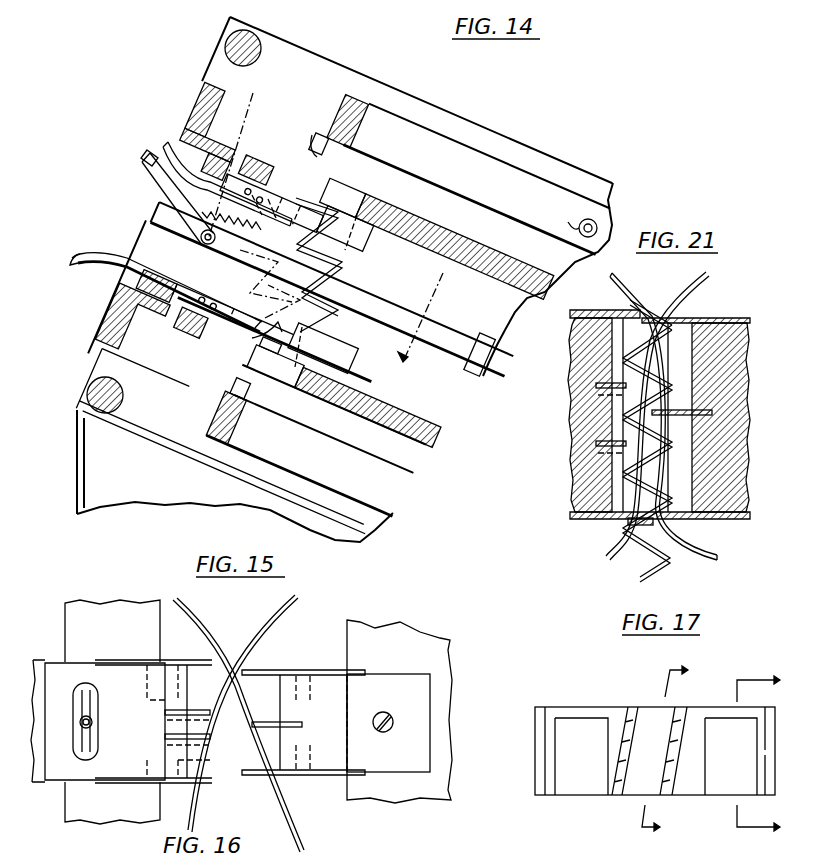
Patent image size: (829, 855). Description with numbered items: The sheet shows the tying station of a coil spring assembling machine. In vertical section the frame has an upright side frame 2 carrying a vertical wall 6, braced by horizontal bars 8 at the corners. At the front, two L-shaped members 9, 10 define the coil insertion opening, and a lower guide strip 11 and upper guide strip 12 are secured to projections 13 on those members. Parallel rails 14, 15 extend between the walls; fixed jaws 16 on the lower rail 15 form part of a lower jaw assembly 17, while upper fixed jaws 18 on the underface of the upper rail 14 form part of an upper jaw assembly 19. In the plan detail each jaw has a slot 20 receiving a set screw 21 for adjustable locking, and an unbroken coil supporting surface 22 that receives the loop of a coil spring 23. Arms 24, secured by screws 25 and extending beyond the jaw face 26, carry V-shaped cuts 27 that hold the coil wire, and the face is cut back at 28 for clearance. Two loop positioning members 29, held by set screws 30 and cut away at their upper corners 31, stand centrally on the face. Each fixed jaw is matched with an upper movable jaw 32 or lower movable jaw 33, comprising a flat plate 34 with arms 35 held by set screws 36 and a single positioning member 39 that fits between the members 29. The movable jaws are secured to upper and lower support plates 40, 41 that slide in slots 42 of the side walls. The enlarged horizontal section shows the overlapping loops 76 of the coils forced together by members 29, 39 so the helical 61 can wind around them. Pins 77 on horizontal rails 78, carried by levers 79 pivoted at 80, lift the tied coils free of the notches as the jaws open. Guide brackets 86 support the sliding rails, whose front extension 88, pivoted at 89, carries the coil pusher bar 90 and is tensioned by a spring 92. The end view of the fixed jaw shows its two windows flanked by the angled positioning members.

In FIG. 14, the side frame 2 is at (75, 478).
In FIG. 14, the vertical wall 6 is at (462, 132).
In FIG. 14, the horizontal bar 8 is at (262, 50).
In FIG. 14, the L-shaped member 9 is at (205, 95).
In FIG. 14, the L-shaped member 10 is at (112, 326).
In FIG. 14, the lower guide strip 11 is at (73, 268).
In FIG. 14, the upper guide strip 12 is at (180, 160).
In FIG. 14, the projection 13 is at (178, 140).
In FIG. 14, the upper rail 14 is at (262, 155).
In FIG. 14, the lower rail 15 is at (186, 352).
In FIG. 15, the lower rail 15 is at (78, 612).
In FIG. 14, the fixed jaw 16 is at (221, 303).
In FIG. 21, the fixed jaw 16 is at (572, 360).
In FIG. 15, the fixed jaw 16 is at (50, 662).
In FIG. 14, the lower jaw assembly 17 is at (274, 315).
In FIG. 14, the upper fixed jaw 18 is at (254, 202).
In FIG. 17, the upper fixed jaw 18 is at (685, 751).
In FIG. 14, the upper jaw assembly 19 is at (323, 247).
In FIG. 17, the upper jaw assembly 19 is at (778, 754).
In FIG. 15, the slot 20 is at (92, 755).
In FIG. 15, the set screw 21 is at (80, 718).
In FIG. 15, the coil supporting surface 22 is at (118, 765).
In FIG. 14, the coil spring 23 is at (277, 368).
In FIG. 21, the coil spring 23 is at (622, 280).
In FIG. 15, the coil spring 23 is at (245, 806).
In FIG. 14, the arm 24 is at (285, 197).
In FIG. 21, the arm 24 is at (618, 518).
In FIG. 15, the arm 24 is at (182, 660).
In FIG. 17, the arm 24 is at (778, 722).
In FIG. 14, the screw 25 is at (252, 222).
In FIG. 15, the jaw face 26 is at (232, 800).
In FIG. 17, the jaw face 26 is at (688, 790).
In FIG. 14, the V-shaped cut 27 is at (317, 195).
In FIG. 21, the V-shaped cut 27 is at (662, 303).
In FIG. 17, the V-shaped cut 27 is at (775, 752).
In FIG. 17, the cut back 28 is at (578, 785).
In FIG. 21, the loop positioning member 29 is at (598, 386).
In FIG. 15, the loop positioning member 29 is at (203, 712).
In FIG. 17, the loop positioning member 29 is at (645, 712).
In FIG. 15, the set screw 30 is at (160, 696).
In FIG. 15, the cut 31 is at (205, 716).
In FIG. 17, the cut 31 is at (620, 712).
In FIG. 14, the upper movable jaw 32 is at (385, 268).
In FIG. 14, the lower movable jaw 33 is at (347, 330).
In FIG. 21, the lower movable jaw 33 is at (735, 320).
In FIG. 15, the lower movable jaw 33 is at (438, 677).
In FIG. 15, the plate 34 is at (420, 733).
In FIG. 14, the arm 35 is at (350, 245).
In FIG. 21, the arm 35 is at (688, 520).
In FIG. 15, the arm 35 is at (262, 672).
In FIG. 15, the set screw 36 is at (312, 672).
In FIG. 21, the coil segment positioning member 39 is at (684, 408).
In FIG. 15, the coil segment positioning member 39 is at (272, 728).
In FIG. 14, the upper support plate 40 is at (485, 258).
In FIG. 15, the upper support plate 40 is at (445, 792).
In FIG. 14, the lower support plate 41 is at (415, 412).
In FIG. 14, the slot 42 is at (300, 410).
In FIG. 21, the helical 61 is at (625, 295).
In FIG. 21, the loop 76 is at (622, 368).
In FIG. 14, the pin 77 is at (322, 148).
In FIG. 14, the horizontal rail 78 is at (360, 140).
In FIG. 14, the lever 79 is at (537, 197).
In FIG. 14, the pivot 80 is at (572, 220).
In FIG. 14, the guide bracket 86 is at (490, 335).
In FIG. 14, the extension 88 is at (162, 174).
In FIG. 14, the pivot 89 is at (192, 250).
In FIG. 14, the coil pusher bar 90 is at (152, 150).
In FIG. 14, the spring 92 is at (200, 233).